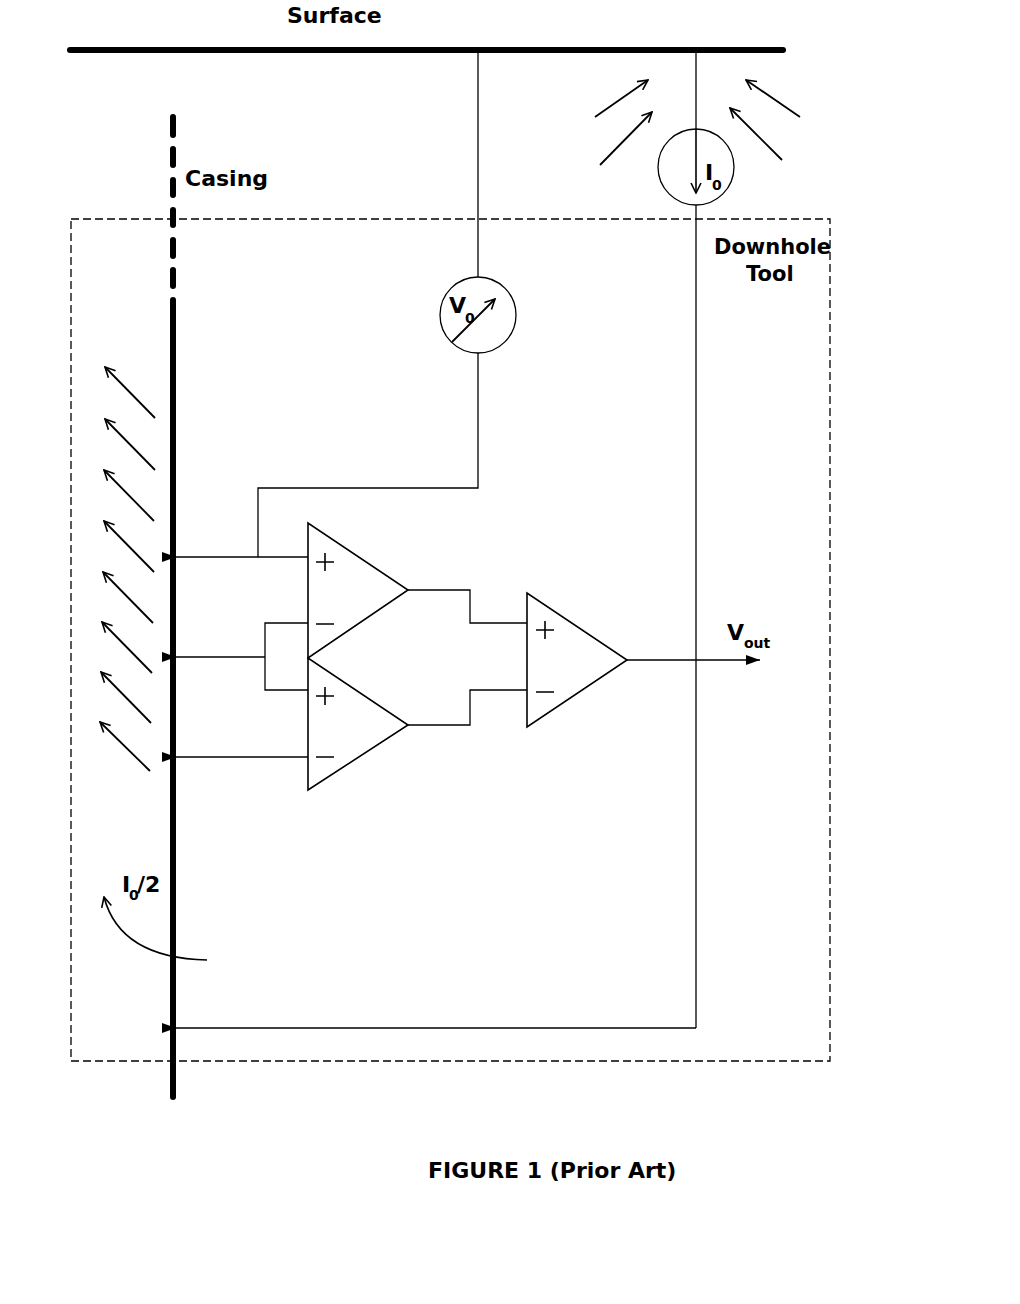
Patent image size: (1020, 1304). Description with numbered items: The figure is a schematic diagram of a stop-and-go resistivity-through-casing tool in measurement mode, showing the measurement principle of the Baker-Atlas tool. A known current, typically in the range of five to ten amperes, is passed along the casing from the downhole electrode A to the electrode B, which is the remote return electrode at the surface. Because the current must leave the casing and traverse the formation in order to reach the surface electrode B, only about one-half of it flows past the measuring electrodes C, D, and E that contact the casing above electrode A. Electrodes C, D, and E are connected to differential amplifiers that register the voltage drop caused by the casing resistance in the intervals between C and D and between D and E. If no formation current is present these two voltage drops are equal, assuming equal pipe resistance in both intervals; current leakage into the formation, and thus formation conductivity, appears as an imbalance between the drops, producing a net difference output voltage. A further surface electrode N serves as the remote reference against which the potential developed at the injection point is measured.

The surface electrode N is at (478, 143).
The electrode B is at (696, 69).
The electrode C is at (242, 534).
The electrode D is at (220, 639).
The electrode E is at (242, 739).
The electrode A is at (436, 1013).